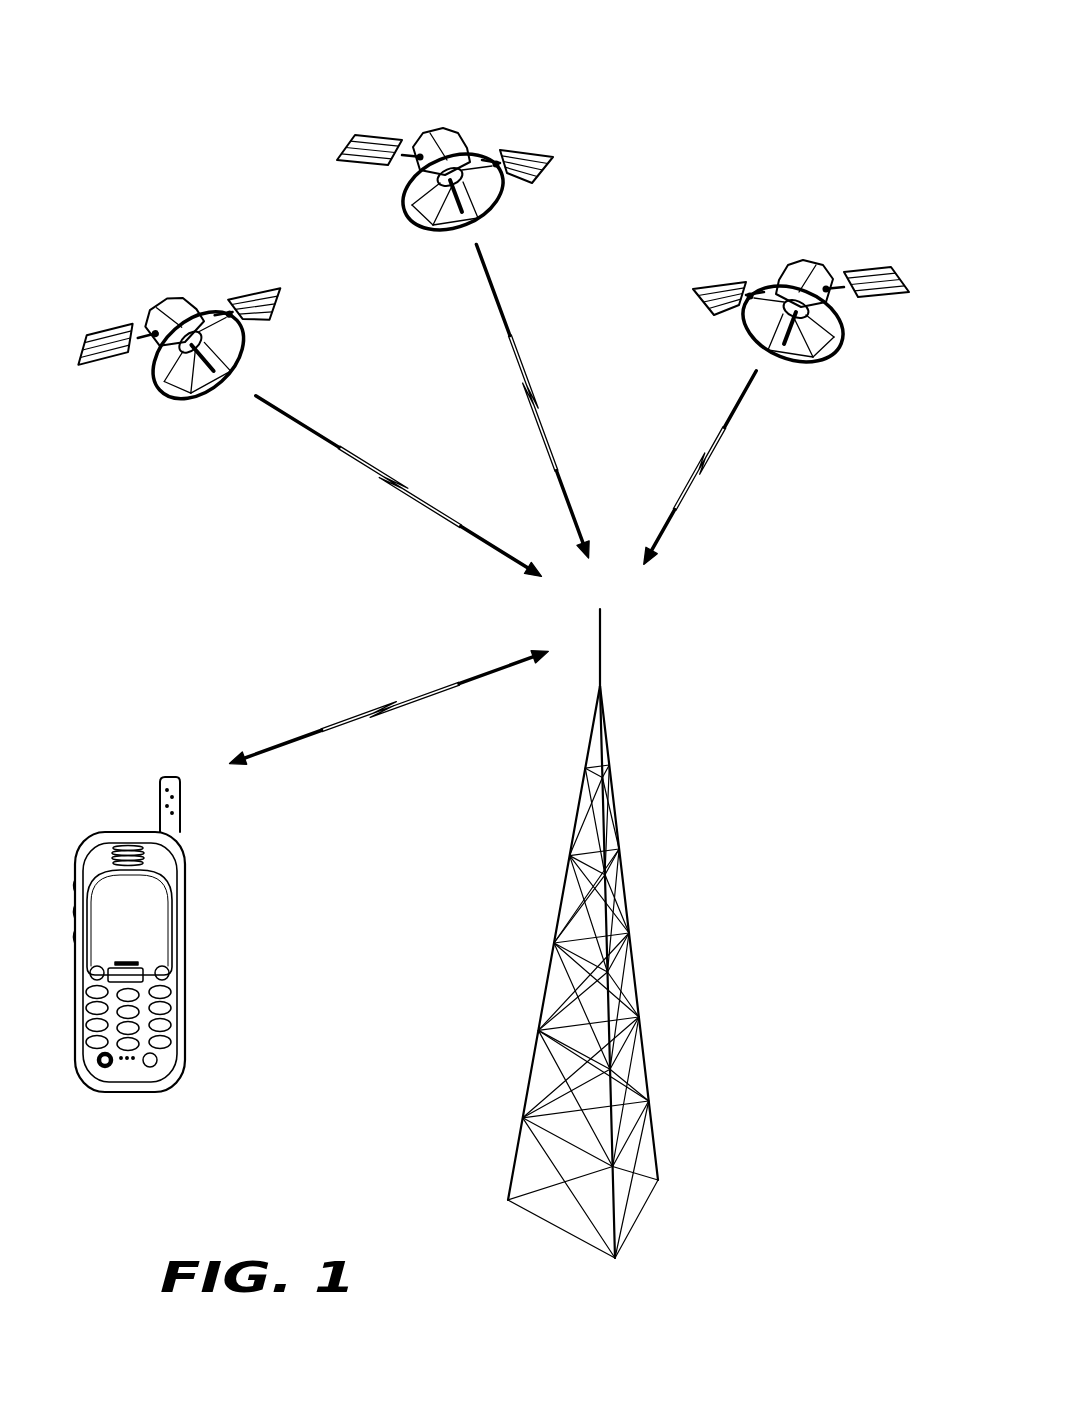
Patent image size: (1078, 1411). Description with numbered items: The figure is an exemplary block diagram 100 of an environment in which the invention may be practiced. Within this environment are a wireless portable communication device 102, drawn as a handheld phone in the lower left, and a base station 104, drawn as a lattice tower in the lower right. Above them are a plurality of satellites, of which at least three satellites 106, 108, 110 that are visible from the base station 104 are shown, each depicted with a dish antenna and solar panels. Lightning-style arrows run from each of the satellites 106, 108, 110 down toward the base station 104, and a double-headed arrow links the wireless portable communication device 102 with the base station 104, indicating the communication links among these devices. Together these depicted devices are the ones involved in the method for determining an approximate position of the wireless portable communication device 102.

The block diagram 100 is at (830, 15).
The wireless portable communication device 102 is at (127, 1094).
The base station 104 is at (644, 1027).
The satellite 106 is at (165, 299).
The satellite 108 is at (436, 127).
The satellite 110 is at (824, 256).